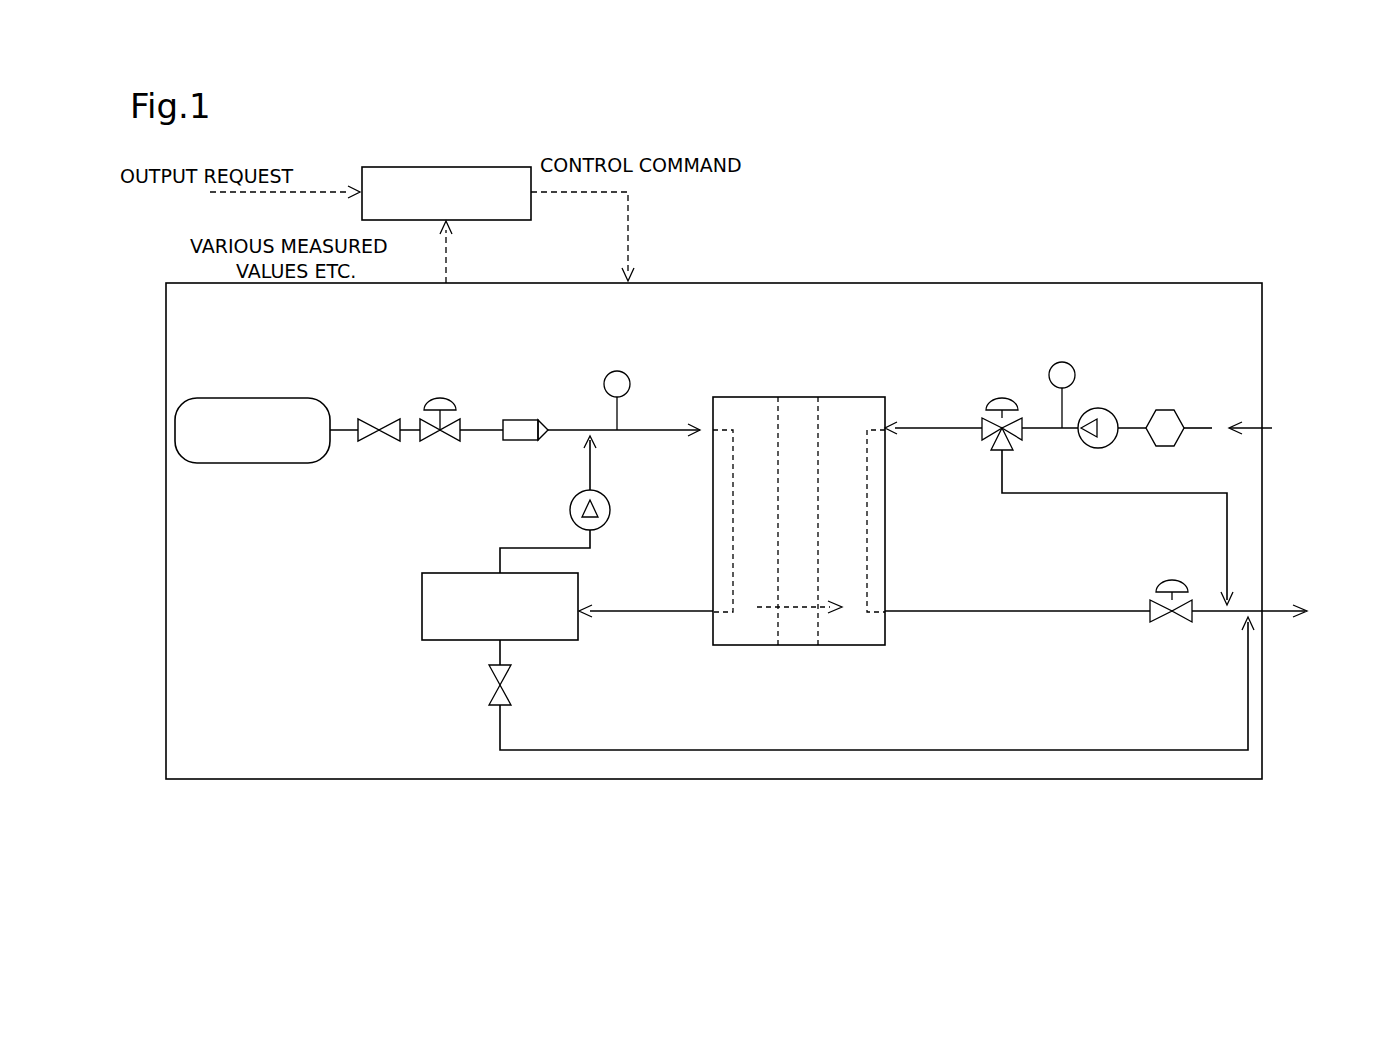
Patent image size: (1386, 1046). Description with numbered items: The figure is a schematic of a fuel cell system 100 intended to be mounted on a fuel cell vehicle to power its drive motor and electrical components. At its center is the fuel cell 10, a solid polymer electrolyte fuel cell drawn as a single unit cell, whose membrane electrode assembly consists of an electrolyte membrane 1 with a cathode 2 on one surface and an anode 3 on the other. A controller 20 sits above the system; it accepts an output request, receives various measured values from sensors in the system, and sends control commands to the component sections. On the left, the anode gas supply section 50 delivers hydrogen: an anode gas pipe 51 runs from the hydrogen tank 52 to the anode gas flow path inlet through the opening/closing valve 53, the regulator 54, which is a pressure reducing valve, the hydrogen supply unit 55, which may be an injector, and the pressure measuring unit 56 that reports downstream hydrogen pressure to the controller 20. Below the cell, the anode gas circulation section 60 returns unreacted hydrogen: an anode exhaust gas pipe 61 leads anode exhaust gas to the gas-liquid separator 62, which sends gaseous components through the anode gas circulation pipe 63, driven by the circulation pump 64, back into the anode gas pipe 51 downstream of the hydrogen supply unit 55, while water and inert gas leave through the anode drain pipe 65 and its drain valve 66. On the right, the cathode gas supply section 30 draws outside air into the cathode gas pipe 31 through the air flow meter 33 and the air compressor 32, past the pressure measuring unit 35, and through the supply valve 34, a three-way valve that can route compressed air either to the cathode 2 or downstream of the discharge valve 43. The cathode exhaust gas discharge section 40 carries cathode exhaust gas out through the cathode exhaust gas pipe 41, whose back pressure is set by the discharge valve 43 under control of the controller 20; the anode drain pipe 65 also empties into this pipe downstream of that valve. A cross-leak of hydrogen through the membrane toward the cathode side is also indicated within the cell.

The fuel cell system 100 is at (1140, 194).
The controller 20 is at (480, 167).
The fuel cell 10 is at (812, 330).
The electrolyte membrane 1 is at (797, 397).
The cathode 2 is at (835, 397).
The anode 3 is at (758, 397).
The anode gas supply section 50 is at (318, 332).
The anode gas pipe 51 is at (565, 430).
The hydrogen tank 52 is at (268, 398).
The opening/closing valve 53 is at (388, 423).
The regulator 54 is at (440, 398).
The hydrogen supply unit 55 is at (512, 420).
The pressure measuring unit 56 is at (604, 380).
The anode gas circulation section 60 is at (400, 590).
The anode exhaust gas pipe 61 is at (620, 618).
The gas-liquid separator 62 is at (475, 573).
The anode gas circulation pipe 63 is at (560, 548).
The circulation pump 64 is at (572, 500).
The anode drain pipe 65 is at (498, 722).
The drain valve 66 is at (495, 690).
The cathode gas supply section 30 is at (1110, 352).
The cathode gas pipe 31 is at (938, 428).
The air compressor 32 is at (1105, 410).
The air flow meter 33 is at (1172, 412).
The supply valve 34 is at (1000, 396).
The pressure measuring unit 35 is at (1065, 362).
The cathode exhaust gas discharge section 40 is at (1092, 690).
The cathode exhaust gas pipe 41 is at (1272, 606).
The discharge valve 43 is at (1172, 578).